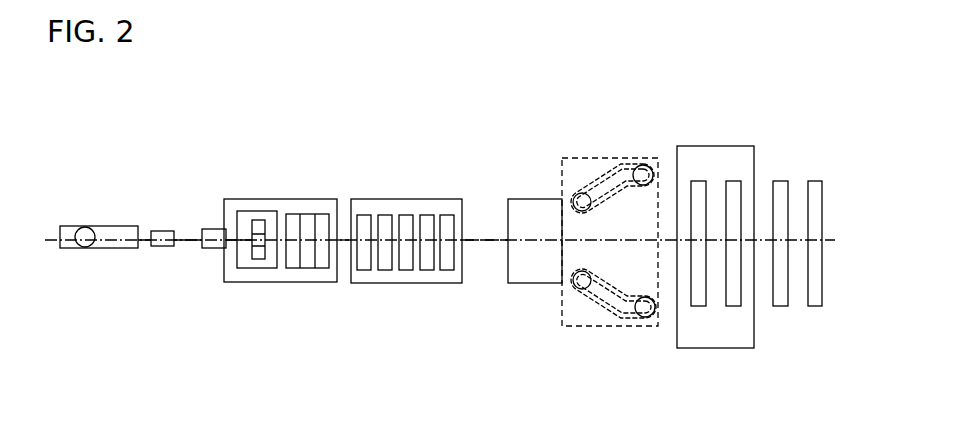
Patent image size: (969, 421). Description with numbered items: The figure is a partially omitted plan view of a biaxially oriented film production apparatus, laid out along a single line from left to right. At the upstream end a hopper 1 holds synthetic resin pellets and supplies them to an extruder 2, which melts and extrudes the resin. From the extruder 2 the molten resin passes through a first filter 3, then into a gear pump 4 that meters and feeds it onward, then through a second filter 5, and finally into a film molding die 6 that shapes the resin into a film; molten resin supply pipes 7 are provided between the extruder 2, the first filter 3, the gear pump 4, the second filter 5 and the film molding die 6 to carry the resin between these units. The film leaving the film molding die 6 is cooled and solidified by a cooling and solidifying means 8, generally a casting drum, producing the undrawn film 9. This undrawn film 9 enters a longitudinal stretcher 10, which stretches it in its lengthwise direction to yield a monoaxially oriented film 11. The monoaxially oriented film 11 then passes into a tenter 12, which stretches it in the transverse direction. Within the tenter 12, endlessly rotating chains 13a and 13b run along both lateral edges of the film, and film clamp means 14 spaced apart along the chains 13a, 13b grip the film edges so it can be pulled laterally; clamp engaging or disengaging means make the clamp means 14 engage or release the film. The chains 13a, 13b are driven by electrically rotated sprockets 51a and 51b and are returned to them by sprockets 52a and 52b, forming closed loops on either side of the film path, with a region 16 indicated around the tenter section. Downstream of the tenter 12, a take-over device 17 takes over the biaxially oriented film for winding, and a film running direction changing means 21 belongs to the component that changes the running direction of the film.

The hopper 1 is at (85, 245).
The extruder 2 is at (112, 247).
The first filter 3 is at (167, 247).
The gear pump 4 is at (210, 230).
The second filter 5 is at (265, 245).
The film molding die 6 is at (258, 258).
The molten resin supply pipes 7 is at (235, 240).
The cooling and solidifying means 8 is at (285, 200).
The undrawn film 9 is at (340, 240).
The longitudinal stretcher 10 is at (410, 285).
The monoaxially oriented film 11 is at (487, 238).
The tenter 12 is at (531, 261).
The endless chain 13a is at (573, 163).
The endless chain 13b is at (576, 339).
The film clamp means 14 is at (587, 217).
The conveying section 16 is at (663, 243).
The take-over device 17 is at (727, 345).
The film running direction changing means 21 is at (522, 285).
The sprocket 51a is at (566, 188).
The sprocket 51b is at (568, 298).
The sprocket 52a is at (650, 165).
The sprocket 52b is at (642, 315).